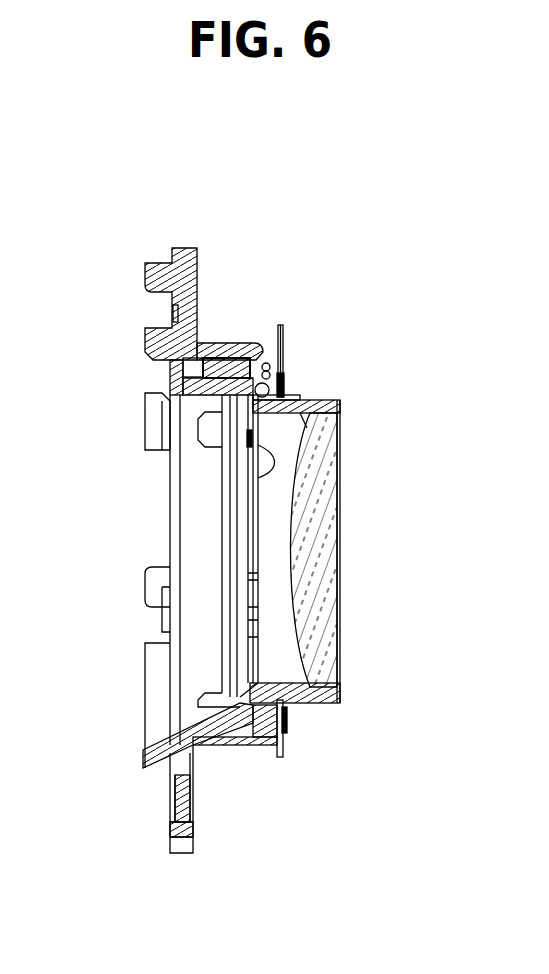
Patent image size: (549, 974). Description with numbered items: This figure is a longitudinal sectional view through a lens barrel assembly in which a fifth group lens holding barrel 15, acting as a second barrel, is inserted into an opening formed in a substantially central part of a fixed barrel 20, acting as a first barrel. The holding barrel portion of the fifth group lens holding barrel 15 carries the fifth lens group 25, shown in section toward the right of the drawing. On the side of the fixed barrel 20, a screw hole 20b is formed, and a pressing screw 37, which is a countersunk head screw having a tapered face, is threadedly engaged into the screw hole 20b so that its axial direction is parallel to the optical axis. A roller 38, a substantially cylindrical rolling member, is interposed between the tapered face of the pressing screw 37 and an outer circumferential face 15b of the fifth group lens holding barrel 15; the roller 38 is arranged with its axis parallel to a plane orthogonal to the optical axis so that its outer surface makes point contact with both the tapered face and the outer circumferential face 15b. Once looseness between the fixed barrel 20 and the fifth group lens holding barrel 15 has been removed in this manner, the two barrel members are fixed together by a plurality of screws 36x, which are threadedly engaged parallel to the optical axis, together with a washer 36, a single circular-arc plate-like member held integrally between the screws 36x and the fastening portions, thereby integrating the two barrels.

The fifth group lens holding barrel 15 is at (322, 403).
The outer circumferential face 15b is at (320, 400).
The fixed barrel 20 is at (222, 345).
The screw hole 20b is at (172, 364).
The fifth lens group 25 is at (326, 540).
The washer 36 is at (281, 325).
The screws 36x is at (292, 719).
The pressing screw 37 is at (300, 388).
The roller 38 is at (180, 398).